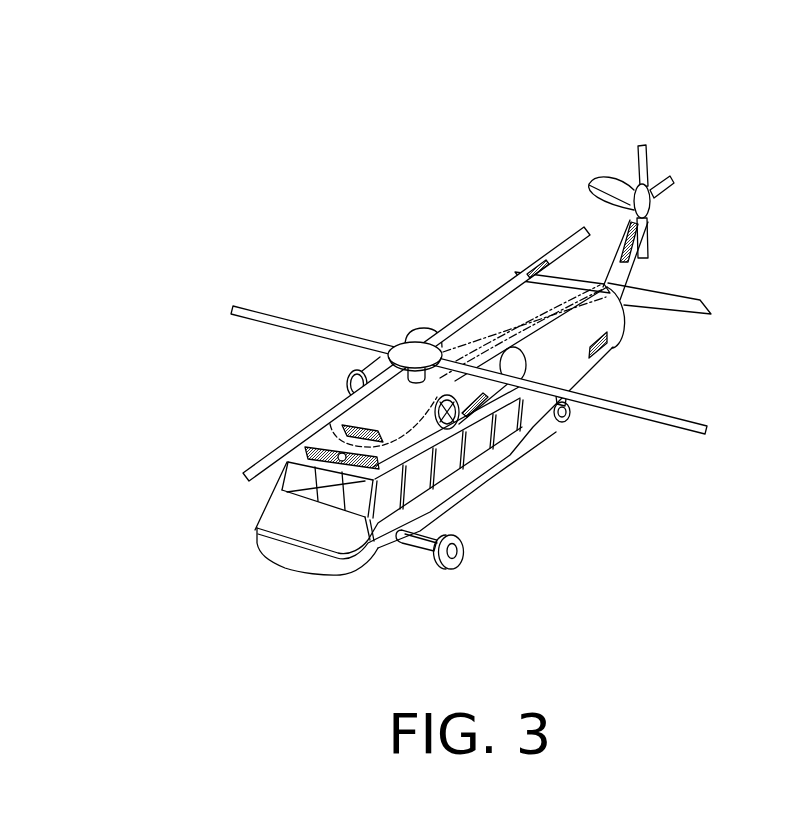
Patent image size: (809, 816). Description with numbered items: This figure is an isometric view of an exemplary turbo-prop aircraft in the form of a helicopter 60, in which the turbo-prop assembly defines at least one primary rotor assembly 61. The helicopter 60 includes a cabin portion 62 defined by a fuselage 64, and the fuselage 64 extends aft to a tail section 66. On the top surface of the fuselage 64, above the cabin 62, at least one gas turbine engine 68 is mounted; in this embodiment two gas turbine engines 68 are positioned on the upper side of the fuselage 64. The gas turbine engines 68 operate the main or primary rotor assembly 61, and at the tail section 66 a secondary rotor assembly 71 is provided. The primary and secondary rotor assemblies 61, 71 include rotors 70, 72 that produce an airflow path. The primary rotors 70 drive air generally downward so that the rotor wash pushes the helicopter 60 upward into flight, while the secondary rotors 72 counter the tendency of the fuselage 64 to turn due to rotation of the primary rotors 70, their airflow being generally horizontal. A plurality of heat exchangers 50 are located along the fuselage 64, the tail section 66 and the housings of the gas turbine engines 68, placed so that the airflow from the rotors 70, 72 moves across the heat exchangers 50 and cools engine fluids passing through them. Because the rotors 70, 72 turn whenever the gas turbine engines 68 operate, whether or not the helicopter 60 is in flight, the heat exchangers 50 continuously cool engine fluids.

The heat exchanger 50 is at (353, 424).
The helicopter 60 is at (343, 191).
The primary rotor assembly 61 is at (316, 308).
The cabin portion 62 is at (534, 566).
The fuselage 64 is at (560, 367).
The tail section 66 is at (676, 206).
The gas turbine engine 68 is at (418, 336).
The primary rotor 70 is at (270, 314).
The secondary rotor assembly 71 is at (618, 123).
The secondary rotor 72 is at (645, 146).